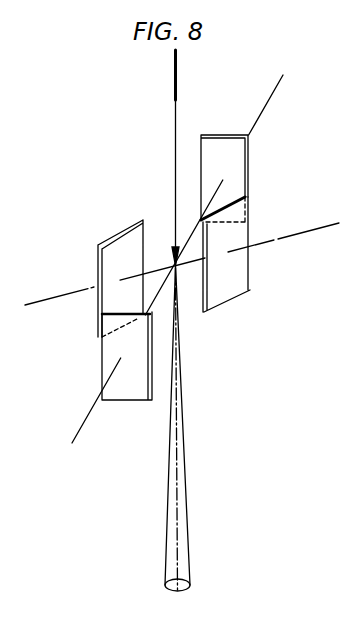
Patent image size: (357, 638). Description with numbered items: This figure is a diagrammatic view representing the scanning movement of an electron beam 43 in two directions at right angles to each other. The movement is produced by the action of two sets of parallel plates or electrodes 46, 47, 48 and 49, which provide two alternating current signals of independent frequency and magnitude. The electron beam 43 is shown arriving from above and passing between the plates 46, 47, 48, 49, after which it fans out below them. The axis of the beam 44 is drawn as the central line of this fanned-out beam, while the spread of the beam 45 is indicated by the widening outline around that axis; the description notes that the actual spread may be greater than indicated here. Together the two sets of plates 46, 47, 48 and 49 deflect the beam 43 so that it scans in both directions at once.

The electron beam 43 is at (175, 160).
The axis of the beam 44 is at (177, 540).
The spread of the beam 45 is at (185, 493).
The parallel plate or electrode 46 is at (112, 258).
The parallel plate or electrode 47 is at (247, 273).
The parallel plate or electrode 48 is at (113, 351).
The parallel plate or electrode 49 is at (237, 157).